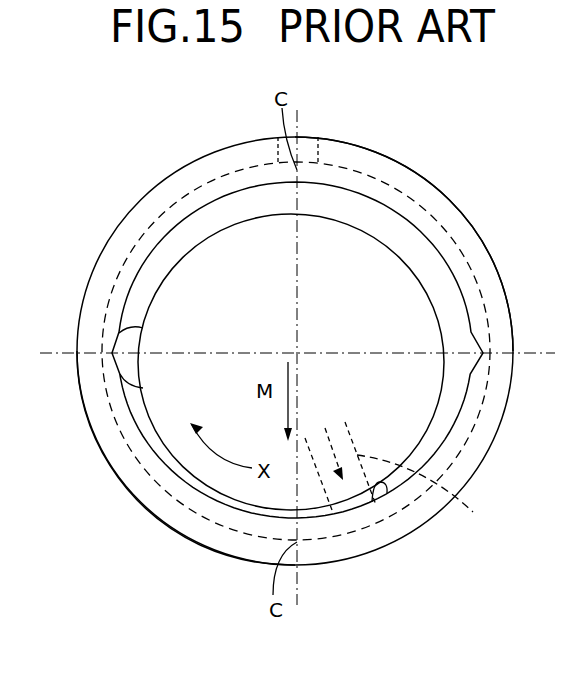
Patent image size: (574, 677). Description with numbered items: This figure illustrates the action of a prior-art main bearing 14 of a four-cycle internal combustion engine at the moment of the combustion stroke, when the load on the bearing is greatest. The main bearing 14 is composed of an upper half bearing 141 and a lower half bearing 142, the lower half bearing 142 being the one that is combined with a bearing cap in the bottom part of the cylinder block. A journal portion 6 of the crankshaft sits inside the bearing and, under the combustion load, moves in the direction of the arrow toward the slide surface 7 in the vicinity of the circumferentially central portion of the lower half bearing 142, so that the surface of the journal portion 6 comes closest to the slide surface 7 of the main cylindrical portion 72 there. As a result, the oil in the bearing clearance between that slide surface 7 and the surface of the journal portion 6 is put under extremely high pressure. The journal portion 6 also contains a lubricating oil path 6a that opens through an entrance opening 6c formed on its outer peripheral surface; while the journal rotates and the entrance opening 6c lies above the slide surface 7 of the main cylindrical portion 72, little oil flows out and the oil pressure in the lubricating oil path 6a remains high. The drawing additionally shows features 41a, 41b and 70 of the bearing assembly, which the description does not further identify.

The main bearing 14 is at (390, 157).
The half bearing 141 is at (428, 183).
The half bearing 142 is at (160, 518).
The main cylindrical portion 72 is at (217, 532).
The magnet center line 41a is at (192, 207).
The magnet 41b is at (310, 148).
The journal portion 6 is at (180, 390).
The groove 70 is at (140, 324).
The lubricating oil path 6a is at (425, 498).
The entrance opening 6c is at (352, 507).
The slide surface 7 is at (387, 493).